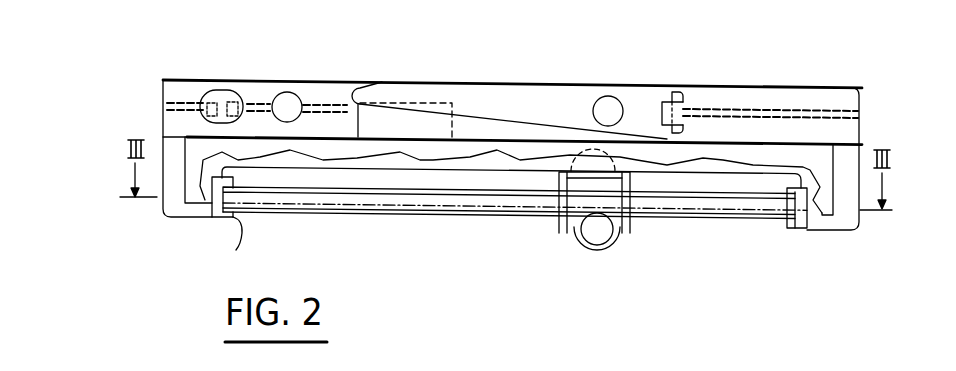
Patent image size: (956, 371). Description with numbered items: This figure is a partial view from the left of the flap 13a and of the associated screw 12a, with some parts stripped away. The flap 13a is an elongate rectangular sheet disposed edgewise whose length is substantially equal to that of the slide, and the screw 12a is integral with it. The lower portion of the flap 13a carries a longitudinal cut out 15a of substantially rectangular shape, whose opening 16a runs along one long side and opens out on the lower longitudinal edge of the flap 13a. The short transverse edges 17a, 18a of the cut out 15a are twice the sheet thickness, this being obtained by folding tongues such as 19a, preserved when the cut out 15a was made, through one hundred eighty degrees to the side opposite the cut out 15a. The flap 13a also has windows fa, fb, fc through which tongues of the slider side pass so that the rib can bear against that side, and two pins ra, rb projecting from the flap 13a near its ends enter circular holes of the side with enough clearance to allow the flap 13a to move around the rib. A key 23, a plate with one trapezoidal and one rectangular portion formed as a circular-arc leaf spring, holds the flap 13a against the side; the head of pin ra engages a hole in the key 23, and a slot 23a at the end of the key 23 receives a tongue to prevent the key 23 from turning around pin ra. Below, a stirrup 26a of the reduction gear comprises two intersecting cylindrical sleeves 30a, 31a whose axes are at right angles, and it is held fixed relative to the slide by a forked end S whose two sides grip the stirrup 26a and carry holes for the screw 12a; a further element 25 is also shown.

The flap 13a is at (756, 112).
The key 23 is at (486, 112).
The slot 23a is at (682, 110).
The window fc is at (218, 98).
The pin rb is at (288, 105).
The window fb is at (380, 125).
The pin ra is at (610, 110).
The window fa is at (668, 123).
The wavy spring 25 is at (252, 148).
The opening 16a is at (727, 222).
The longitudinal cut out 15a is at (417, 180).
The screw 12a is at (485, 200).
The short transverse edge 17a is at (785, 223).
The tongue 19a is at (800, 198).
The short transverse edge 18a is at (240, 237).
The cylindrical sleeve 30a is at (563, 218).
The forked end S is at (642, 233).
The cylindrical sleeve 31a is at (598, 230).
The stirrup 26a is at (580, 257).